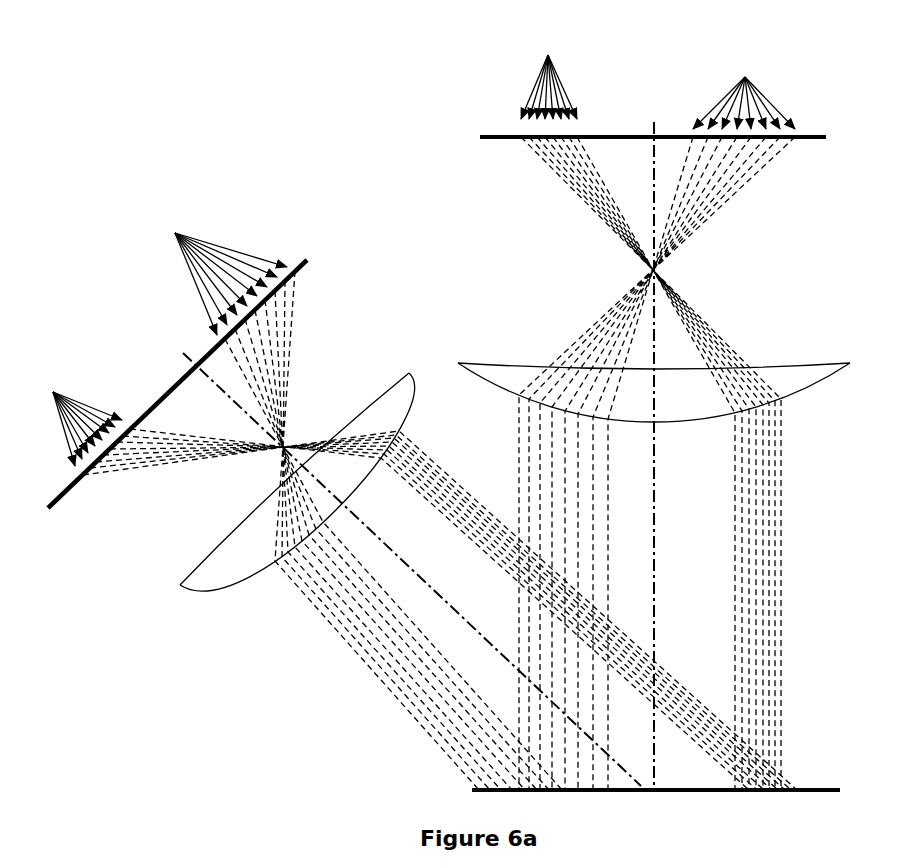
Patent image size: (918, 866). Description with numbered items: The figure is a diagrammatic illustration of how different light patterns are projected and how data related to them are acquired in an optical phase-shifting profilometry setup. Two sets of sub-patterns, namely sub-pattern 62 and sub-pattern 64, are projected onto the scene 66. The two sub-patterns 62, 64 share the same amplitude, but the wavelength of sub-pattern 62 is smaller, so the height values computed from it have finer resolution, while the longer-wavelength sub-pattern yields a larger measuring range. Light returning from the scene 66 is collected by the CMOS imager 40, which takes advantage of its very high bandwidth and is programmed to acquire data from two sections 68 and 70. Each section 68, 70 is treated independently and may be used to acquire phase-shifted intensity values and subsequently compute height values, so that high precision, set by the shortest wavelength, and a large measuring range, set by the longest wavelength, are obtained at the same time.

The CMOS imager 40 is at (470, 137).
The sub-pattern 62 is at (72, 416).
The sub-pattern 64 is at (216, 269).
The scene 66 is at (468, 788).
The section 68 is at (549, 69).
The section 70 is at (744, 85).